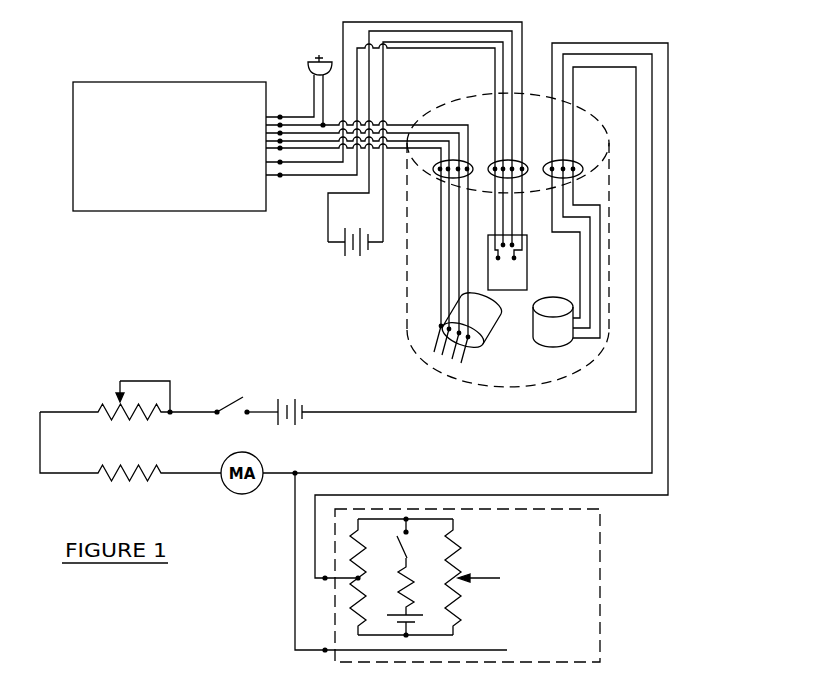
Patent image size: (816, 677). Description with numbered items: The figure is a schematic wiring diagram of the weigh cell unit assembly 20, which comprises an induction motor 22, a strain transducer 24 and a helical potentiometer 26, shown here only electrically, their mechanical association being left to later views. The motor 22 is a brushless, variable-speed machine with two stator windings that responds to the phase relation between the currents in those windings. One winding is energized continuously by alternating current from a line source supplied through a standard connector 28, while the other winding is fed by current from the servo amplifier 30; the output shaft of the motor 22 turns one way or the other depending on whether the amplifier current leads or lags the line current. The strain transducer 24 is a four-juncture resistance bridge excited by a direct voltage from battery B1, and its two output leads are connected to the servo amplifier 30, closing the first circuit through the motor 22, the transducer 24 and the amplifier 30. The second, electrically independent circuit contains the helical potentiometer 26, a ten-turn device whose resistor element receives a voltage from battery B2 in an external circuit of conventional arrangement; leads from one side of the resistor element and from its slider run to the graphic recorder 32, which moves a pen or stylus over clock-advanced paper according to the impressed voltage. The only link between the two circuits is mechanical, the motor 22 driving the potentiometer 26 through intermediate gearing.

The weigh cell unit assembly 20 is at (398, 342).
The induction motor 22 is at (484, 339).
The strain transducer 24 is at (527, 273).
The helical potentiometer 26 is at (551, 348).
The connector 28 is at (308, 62).
The servo amplifier 30 is at (203, 87).
The graphic recorder 32 is at (601, 585).
The battery B1 is at (361, 255).
The battery B2 is at (292, 400).